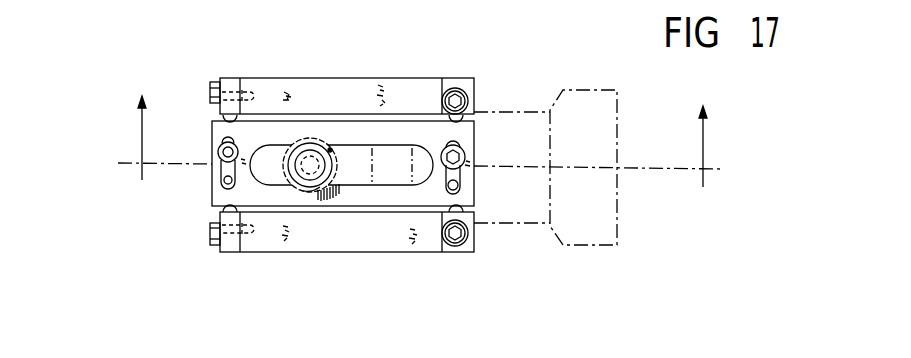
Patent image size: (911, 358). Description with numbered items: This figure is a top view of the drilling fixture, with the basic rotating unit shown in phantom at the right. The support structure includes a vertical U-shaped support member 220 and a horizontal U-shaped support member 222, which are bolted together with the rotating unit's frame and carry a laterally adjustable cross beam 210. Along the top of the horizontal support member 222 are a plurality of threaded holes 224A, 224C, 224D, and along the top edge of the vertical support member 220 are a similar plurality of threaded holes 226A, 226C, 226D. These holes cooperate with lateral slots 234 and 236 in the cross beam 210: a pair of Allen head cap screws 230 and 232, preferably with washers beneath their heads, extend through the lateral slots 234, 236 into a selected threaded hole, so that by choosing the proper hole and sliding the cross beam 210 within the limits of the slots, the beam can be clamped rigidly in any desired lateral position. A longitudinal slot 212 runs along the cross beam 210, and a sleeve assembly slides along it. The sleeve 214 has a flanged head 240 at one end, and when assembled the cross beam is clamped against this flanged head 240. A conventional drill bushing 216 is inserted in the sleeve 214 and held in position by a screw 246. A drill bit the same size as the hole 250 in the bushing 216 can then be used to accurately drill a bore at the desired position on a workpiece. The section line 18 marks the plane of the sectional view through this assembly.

The section line 18- 18 is at (420, 127).
The cross beam 210 is at (388, 135).
The longitudinal slot 212 is at (360, 177).
The sleeve 214 is at (308, 160).
The drill bushing 216 is at (305, 191).
The vertical U-shaped support member 220 is at (228, 243).
The horizontal U-shaped support member 222 is at (455, 247).
The threaded hole 224A is at (460, 121).
The threaded hole 224C is at (461, 186).
The threaded hole 224D is at (478, 217).
The threaded hole 226A is at (230, 120).
The threaded hole 226C is at (222, 185).
The threaded hole 226D is at (221, 210).
The Allen head cap screw 230 is at (219, 148).
The Allen head cap screw 232 is at (465, 157).
The lateral slot 234 is at (223, 172).
The lateral slot 236 is at (457, 141).
The flanged head 240 is at (313, 192).
The screw 246 is at (330, 150).
The hole 250 is at (298, 142).